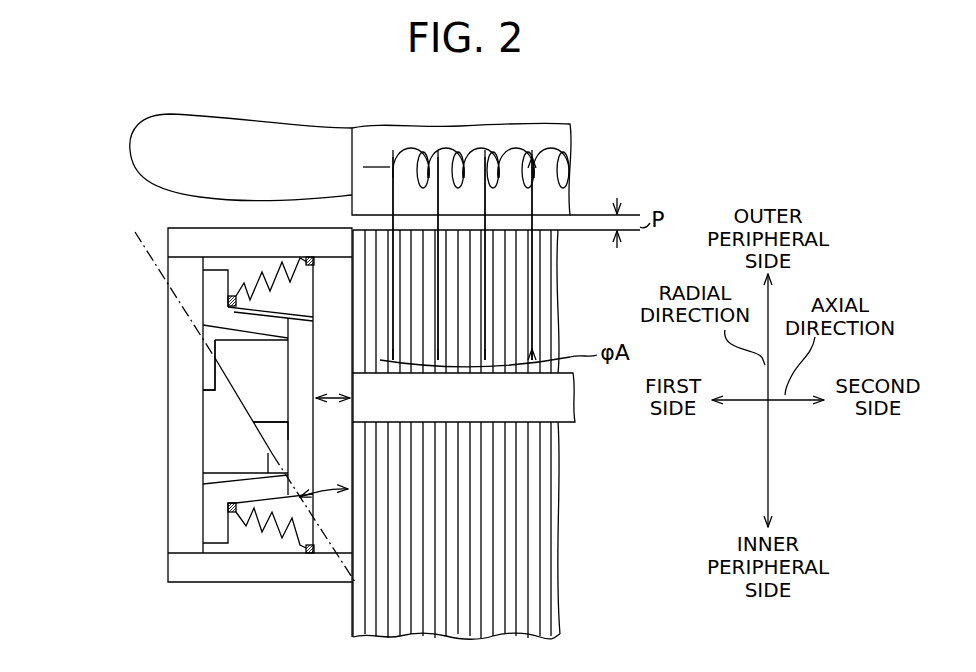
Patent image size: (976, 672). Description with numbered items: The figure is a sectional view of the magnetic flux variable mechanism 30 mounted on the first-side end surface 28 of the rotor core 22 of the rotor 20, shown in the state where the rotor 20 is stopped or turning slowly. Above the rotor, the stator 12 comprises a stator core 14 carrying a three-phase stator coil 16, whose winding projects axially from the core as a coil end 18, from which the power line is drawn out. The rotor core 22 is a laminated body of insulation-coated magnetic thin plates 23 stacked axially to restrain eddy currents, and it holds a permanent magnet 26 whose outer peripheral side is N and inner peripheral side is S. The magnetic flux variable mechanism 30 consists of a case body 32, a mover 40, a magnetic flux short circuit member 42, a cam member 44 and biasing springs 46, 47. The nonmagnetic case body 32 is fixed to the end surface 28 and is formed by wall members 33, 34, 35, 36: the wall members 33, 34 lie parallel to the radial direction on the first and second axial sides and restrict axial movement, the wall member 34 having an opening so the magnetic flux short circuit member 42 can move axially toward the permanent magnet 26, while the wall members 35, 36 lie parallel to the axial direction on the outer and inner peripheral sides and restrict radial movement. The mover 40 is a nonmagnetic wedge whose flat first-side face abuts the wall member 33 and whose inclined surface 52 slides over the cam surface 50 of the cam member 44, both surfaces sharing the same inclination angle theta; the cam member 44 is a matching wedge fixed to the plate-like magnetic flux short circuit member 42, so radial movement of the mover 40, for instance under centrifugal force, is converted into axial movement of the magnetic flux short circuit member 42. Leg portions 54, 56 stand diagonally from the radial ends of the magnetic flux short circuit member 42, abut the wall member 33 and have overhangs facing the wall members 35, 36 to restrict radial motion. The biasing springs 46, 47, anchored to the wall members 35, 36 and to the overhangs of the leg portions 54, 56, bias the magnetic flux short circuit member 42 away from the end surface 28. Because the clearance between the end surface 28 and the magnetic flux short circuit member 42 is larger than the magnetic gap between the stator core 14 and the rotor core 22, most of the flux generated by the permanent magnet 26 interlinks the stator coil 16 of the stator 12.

The stator 12 is at (587, 155).
The stator core 14 is at (422, 138).
The stator coil 16 is at (482, 140).
The coil end 18 is at (222, 148).
The rotor 20 is at (570, 532).
The rotor core 22 is at (560, 272).
The magnetic thin plates 23 is at (548, 310).
The permanent magnet 26 is at (565, 396).
The end surface 28 is at (350, 618).
The magnetic flux variable mechanism 30 is at (57, 200).
The case body 32 is at (188, 227).
The wall member 33 is at (178, 408).
The wall member 34 is at (333, 273).
The wall member 35 is at (287, 243).
The wall member 36 is at (249, 572).
The mover 40 is at (218, 462).
The magnetic flux short circuit member 42 is at (218, 497).
The cam member 44 is at (248, 362).
The biasing spring 46 is at (257, 261).
The biasing spring 47 is at (254, 535).
The cam surface 50 is at (212, 376).
The inclined surface 52 is at (281, 436).
The leg portion 54 is at (213, 308).
The leg portion 56 is at (213, 527).